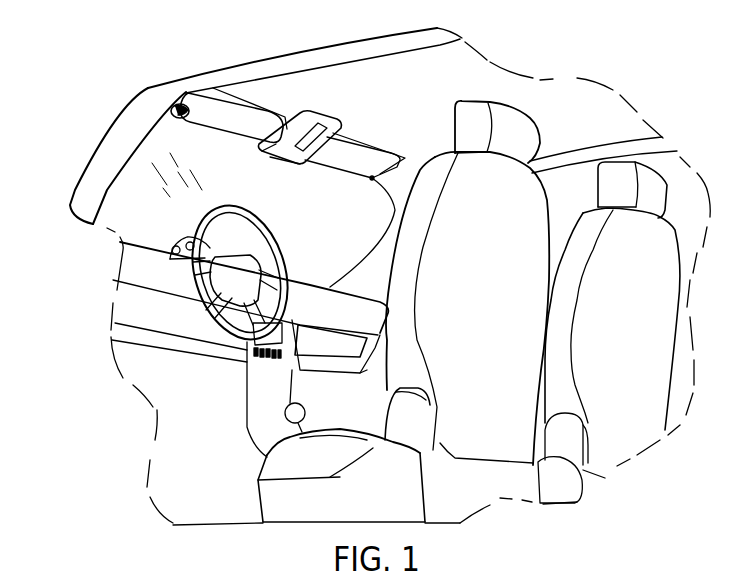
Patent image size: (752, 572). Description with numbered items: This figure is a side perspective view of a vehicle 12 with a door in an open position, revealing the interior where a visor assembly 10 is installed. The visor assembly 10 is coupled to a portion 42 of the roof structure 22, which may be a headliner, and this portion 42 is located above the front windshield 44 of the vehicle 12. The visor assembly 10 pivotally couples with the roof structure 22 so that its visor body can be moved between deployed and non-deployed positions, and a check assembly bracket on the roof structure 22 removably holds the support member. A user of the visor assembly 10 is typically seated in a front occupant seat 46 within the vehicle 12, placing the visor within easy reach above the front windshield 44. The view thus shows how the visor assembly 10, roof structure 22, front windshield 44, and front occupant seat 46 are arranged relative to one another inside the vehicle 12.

The visor assembly 10 is at (209, 137).
The vehicle 12 is at (131, 89).
The roof structure 22 is at (413, 97).
The portion of the roof structure 42 is at (250, 108).
The front windshield 44 is at (220, 155).
The front occupant seat 46 is at (393, 493).